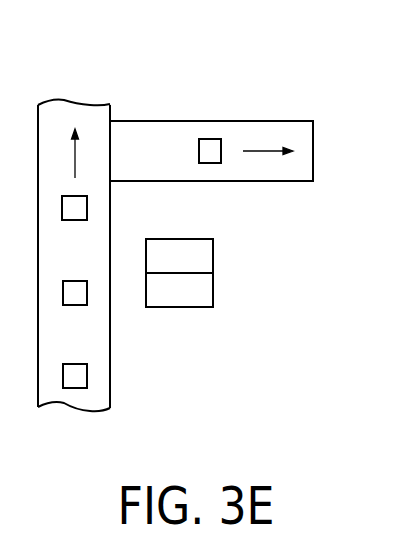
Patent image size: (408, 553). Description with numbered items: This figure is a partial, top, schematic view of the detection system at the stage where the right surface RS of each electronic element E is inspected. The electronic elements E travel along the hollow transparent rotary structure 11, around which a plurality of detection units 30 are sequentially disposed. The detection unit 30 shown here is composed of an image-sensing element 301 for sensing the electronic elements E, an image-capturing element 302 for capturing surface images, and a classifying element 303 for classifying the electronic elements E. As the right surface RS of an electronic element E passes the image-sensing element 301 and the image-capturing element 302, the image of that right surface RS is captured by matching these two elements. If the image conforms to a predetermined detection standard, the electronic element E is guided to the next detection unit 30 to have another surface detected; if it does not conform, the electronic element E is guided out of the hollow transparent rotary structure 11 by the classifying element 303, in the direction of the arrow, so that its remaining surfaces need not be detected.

The hollow transparent rotary structure 11 is at (77, 101).
The detection unit 30 is at (309, 208).
The image-sensing element 301 is at (207, 296).
The image-capturing element 302 is at (207, 258).
The classifying element 303 is at (232, 175).
The right surface RS is at (87, 293).
The electronic element E is at (88, 384).